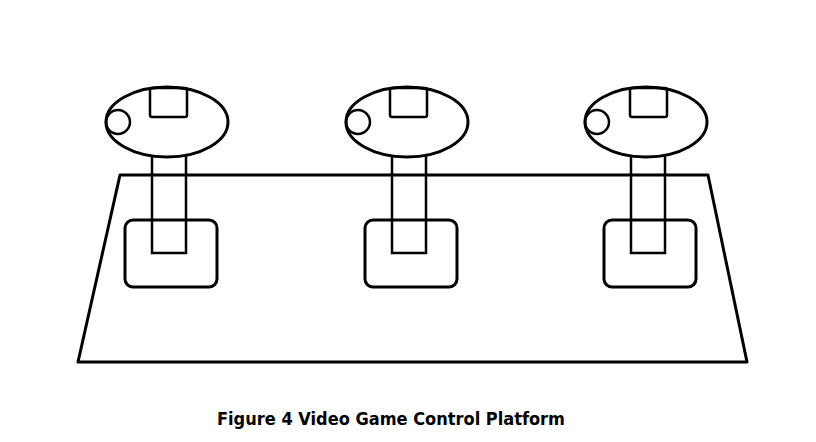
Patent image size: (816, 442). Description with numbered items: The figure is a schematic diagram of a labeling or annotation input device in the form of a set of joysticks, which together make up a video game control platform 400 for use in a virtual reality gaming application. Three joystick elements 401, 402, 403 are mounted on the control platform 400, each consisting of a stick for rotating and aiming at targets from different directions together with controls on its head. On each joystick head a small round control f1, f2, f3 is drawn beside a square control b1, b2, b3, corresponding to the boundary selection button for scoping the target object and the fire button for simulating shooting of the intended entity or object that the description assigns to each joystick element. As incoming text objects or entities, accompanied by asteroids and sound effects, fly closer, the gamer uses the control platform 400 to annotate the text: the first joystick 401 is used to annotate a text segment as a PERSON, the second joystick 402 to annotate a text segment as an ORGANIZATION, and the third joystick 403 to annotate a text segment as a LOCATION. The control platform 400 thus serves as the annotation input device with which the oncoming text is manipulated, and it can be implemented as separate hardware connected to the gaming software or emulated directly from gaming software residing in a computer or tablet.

The video game control platform 400 is at (146, 350).
The joystick 401 is at (155, 159).
The joystick 402 is at (395, 159).
The joystick 403 is at (634, 159).
The first controller function control f1 is at (110, 115).
The second controller function control f2 is at (350, 115).
The third controller function control f3 is at (589, 115).
The first controller button b1 is at (183, 90).
The second controller button b2 is at (423, 90).
The third controller button b3 is at (662, 90).